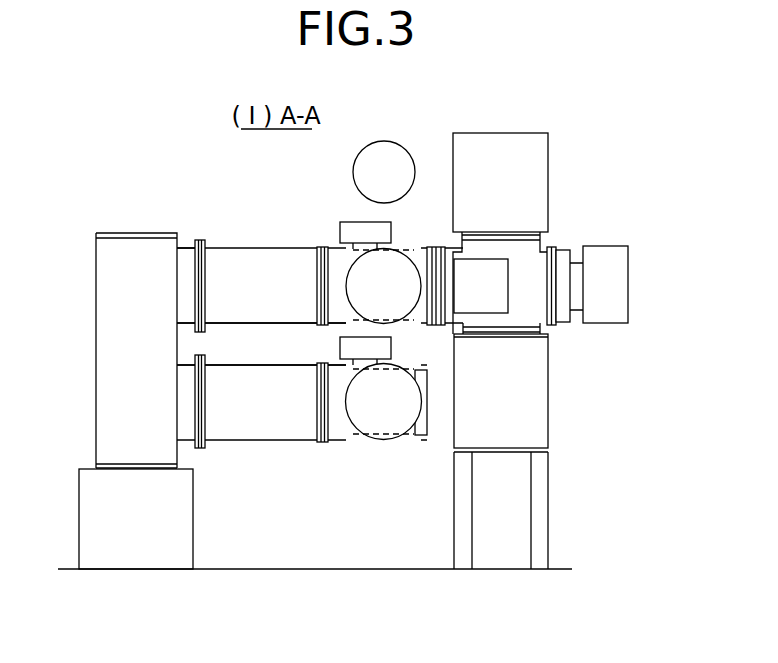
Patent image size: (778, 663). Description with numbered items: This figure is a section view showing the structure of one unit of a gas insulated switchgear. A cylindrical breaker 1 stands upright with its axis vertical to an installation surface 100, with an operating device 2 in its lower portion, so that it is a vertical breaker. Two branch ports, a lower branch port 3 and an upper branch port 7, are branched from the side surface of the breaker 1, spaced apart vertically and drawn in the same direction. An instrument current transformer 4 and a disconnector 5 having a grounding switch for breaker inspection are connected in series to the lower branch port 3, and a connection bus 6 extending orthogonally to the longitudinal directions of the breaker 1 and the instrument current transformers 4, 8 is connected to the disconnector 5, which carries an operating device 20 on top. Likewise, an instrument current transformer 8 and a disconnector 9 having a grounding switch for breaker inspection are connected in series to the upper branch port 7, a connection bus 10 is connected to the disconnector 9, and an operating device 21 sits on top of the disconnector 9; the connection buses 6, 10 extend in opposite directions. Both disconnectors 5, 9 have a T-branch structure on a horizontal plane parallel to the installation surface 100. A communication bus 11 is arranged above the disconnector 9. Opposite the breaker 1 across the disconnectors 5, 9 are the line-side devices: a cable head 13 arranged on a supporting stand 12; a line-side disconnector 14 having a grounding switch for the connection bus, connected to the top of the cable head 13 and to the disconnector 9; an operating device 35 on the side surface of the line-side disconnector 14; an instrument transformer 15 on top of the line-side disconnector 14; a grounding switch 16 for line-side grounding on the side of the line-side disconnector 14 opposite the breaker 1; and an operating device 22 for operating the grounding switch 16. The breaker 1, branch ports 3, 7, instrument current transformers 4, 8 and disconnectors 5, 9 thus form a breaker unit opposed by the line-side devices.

The breaker 1 is at (96, 253).
The operating device 2 is at (193, 520).
The lower branch port 3 is at (186, 374).
The instrument current transformer 4 is at (235, 441).
The disconnector 5 is at (345, 442).
The connection bus 6 is at (418, 437).
The upper branch port 7 is at (183, 240).
The instrument current transformer 8 is at (232, 247).
The disconnector 9 is at (333, 247).
The connection bus 10 is at (400, 249).
The communication bus 11 is at (404, 147).
The supporting stand 12 is at (463, 512).
The cable head 13 is at (548, 412).
The line-side disconnector 14 is at (540, 247).
The instrument transformer 15 is at (548, 153).
The grounding switch 16 is at (562, 318).
The operating device 20 is at (340, 350).
The operating device 21 is at (388, 233).
The operating device 22 is at (628, 265).
The operating device 35 is at (473, 297).
The installation surface 100 is at (557, 572).